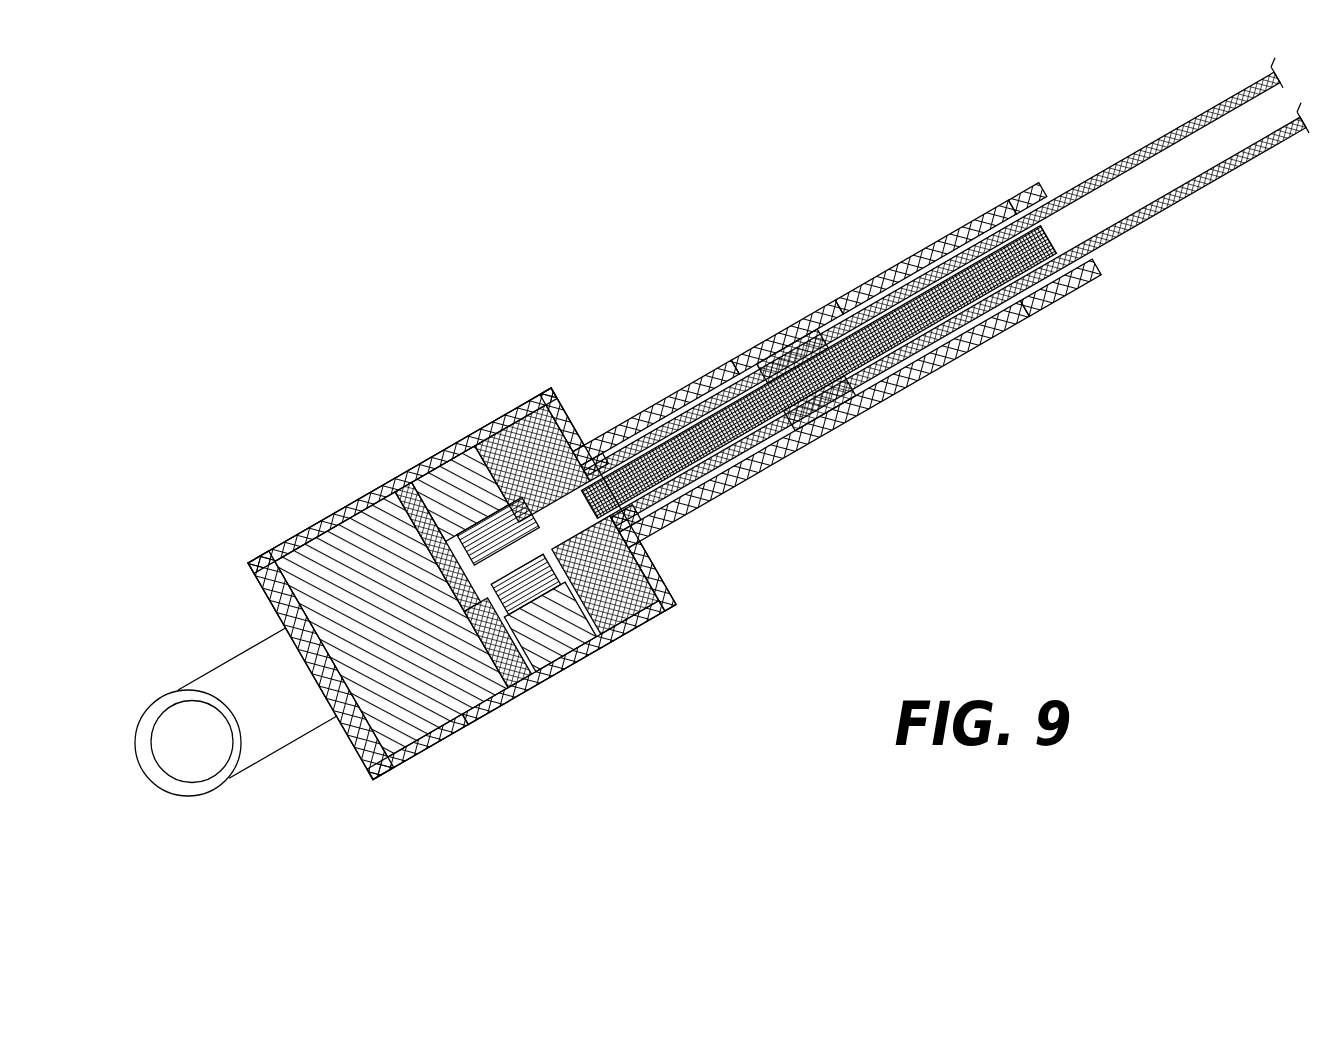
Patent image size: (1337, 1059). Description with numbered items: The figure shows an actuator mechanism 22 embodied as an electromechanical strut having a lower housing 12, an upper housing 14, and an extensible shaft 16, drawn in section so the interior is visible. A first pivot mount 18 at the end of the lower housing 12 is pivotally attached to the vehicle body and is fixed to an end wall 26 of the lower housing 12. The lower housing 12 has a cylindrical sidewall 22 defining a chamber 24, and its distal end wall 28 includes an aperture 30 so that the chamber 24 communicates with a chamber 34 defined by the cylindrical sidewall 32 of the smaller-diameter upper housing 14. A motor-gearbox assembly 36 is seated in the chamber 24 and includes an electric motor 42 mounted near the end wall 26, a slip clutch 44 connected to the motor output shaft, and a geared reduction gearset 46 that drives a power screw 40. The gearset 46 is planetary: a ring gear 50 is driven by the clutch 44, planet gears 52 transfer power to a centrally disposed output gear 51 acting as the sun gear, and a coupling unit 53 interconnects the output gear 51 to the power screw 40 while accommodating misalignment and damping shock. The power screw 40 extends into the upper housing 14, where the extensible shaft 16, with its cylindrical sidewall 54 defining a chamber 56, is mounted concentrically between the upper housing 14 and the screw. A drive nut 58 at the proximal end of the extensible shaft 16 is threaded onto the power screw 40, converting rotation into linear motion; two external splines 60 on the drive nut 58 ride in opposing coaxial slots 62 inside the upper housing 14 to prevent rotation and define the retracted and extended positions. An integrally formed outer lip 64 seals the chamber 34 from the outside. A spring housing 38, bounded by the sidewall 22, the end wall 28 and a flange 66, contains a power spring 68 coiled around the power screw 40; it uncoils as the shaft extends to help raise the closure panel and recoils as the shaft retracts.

The lower housing 12 is at (497, 716).
The upper housing 14 is at (960, 360).
The extensible shaft 16 is at (1190, 205).
The first pivot mount 18 is at (212, 792).
The actuator mechanism 22 is at (746, 258).
The chamber 24 is at (343, 545).
The end wall 26 is at (350, 745).
The distal end wall 28 is at (577, 447).
The aperture 30 is at (590, 462).
The cylindrical sidewall 32 is at (890, 265).
The chamber 34 is at (763, 430).
The motor-gearbox assembly 36 is at (432, 742).
The spring housing 38 is at (536, 398).
The power screw 40 is at (700, 463).
The electric motor 42 is at (258, 566).
The slip clutch 44 is at (383, 487).
The geared reduction gearset 46 is at (447, 442).
The ring gear 50 is at (530, 686).
The output gear 51 is at (375, 779).
The planet gears 52 is at (567, 653).
The coupling unit 53 is at (628, 548).
The cylindrical sidewall 54 is at (1100, 245).
The chamber 56 is at (1158, 140).
The drive nut 58 is at (795, 345).
The external splines 60 is at (757, 347).
The coaxial slots 62 is at (700, 383).
The outer lip 64 is at (1043, 197).
The flange 66 is at (482, 448).
The power spring 68 is at (633, 627).